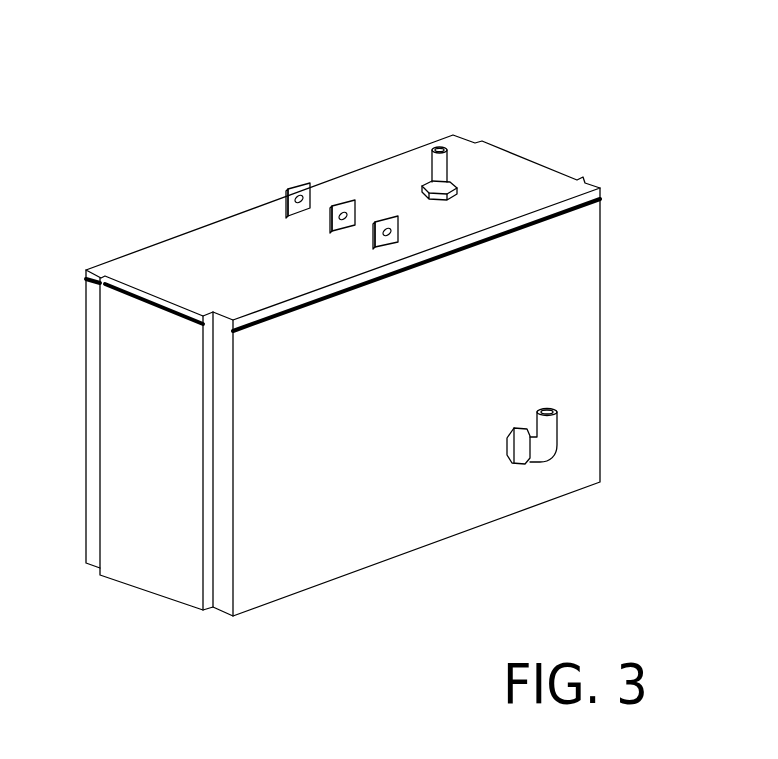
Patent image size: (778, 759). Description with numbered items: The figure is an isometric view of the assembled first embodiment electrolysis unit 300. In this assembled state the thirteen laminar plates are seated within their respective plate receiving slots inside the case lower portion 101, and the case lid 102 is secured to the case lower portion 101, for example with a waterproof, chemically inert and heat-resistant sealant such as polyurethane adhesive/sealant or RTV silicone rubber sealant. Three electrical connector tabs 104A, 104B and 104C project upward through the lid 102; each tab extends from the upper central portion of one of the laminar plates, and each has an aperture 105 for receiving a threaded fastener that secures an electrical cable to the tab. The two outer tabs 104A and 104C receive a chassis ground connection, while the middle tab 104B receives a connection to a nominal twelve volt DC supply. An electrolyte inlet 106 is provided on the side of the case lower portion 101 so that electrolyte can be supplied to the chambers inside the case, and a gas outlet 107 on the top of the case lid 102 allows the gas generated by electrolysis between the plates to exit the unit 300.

The assembled first embodiment electrolysis unit 300 is at (176, 128).
The case lower portion 101 is at (557, 323).
The case lid 102 is at (185, 268).
The electrical connector tab 104A is at (378, 222).
The electrical connector tab 104B is at (336, 204).
The electrical connector tab 104C is at (292, 187).
The aperture 105 is at (363, 238).
The electrolyte inlet 106 is at (548, 438).
The gas outlet 107 is at (440, 162).